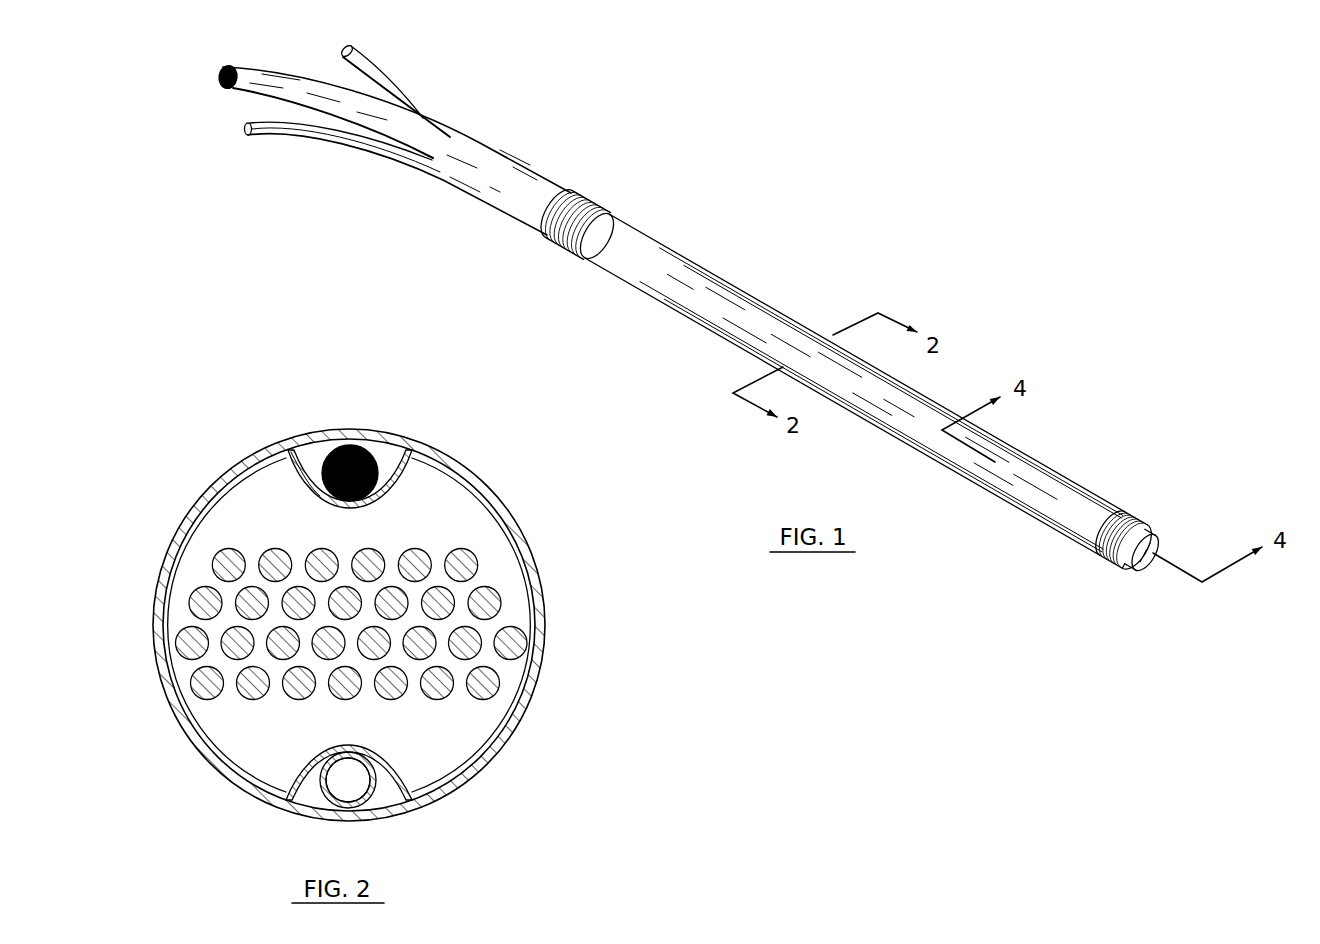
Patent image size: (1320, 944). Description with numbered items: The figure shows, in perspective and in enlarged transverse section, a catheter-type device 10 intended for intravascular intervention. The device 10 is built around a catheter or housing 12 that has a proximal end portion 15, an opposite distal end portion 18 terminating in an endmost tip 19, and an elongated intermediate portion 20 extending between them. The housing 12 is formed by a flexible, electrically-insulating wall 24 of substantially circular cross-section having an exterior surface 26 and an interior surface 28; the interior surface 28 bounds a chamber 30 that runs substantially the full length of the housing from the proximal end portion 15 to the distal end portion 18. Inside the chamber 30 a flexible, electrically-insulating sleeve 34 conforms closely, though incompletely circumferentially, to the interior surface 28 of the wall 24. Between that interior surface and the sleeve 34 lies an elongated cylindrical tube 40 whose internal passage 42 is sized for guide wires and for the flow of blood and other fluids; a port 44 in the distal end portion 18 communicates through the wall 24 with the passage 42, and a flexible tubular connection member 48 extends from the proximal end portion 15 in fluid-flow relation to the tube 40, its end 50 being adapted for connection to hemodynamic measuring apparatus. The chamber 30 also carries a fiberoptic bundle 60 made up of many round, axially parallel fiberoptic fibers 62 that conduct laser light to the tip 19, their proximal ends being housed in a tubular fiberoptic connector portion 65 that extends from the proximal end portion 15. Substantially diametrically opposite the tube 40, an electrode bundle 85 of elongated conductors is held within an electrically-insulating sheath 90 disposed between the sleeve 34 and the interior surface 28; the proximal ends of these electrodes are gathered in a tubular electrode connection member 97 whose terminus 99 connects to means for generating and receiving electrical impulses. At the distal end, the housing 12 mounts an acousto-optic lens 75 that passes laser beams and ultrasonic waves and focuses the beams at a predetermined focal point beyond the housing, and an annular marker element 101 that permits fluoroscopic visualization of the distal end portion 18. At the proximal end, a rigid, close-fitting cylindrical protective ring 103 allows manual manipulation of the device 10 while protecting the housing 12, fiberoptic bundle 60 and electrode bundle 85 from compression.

In FIG. 1, the device 10 is at (722, 267).
In FIG. 1, the housing 12 is at (643, 235).
In FIG. 1, the proximal end portion 15 is at (482, 143).
In FIG. 1, the distal end portion 18 is at (1057, 473).
In FIG. 1, the tip 19 is at (1148, 527).
In FIG. 1, the intermediate portion 20 is at (777, 317).
In FIG. 2, the wall 24 is at (230, 478).
In FIG. 2, the exterior surface 26 is at (497, 488).
In FIG. 2, the interior surface 28 is at (413, 450).
In FIG. 2, the chamber 30 is at (467, 530).
In FIG. 2, the sleeve 34 is at (190, 520).
In FIG. 2, the tube 40 is at (372, 803).
In FIG. 2, the passage 42 is at (347, 780).
In FIG. 1, the port 44 is at (1120, 566).
In FIG. 1, the tubular connection member 48 is at (305, 127).
In FIG. 1, the end 50 is at (248, 125).
In FIG. 2, the fiberoptic bundle 60 is at (485, 578).
In FIG. 2, the fiberoptic fibers 62 is at (192, 636).
In FIG. 1, the fiberoptic connector portion 65 is at (278, 74).
In FIG. 1, the acousto-optic lens 75 is at (1157, 543).
In FIG. 2, the electrode bundle 85 is at (355, 450).
In FIG. 2, the electrically-insulating sheath 90 is at (380, 453).
In FIG. 1, the electrode connection member 97 is at (403, 100).
In FIG. 1, the terminus 99 is at (350, 48).
In FIG. 1, the annular marker element 101 is at (1122, 510).
In FIG. 1, the protective ring 103 is at (554, 240).